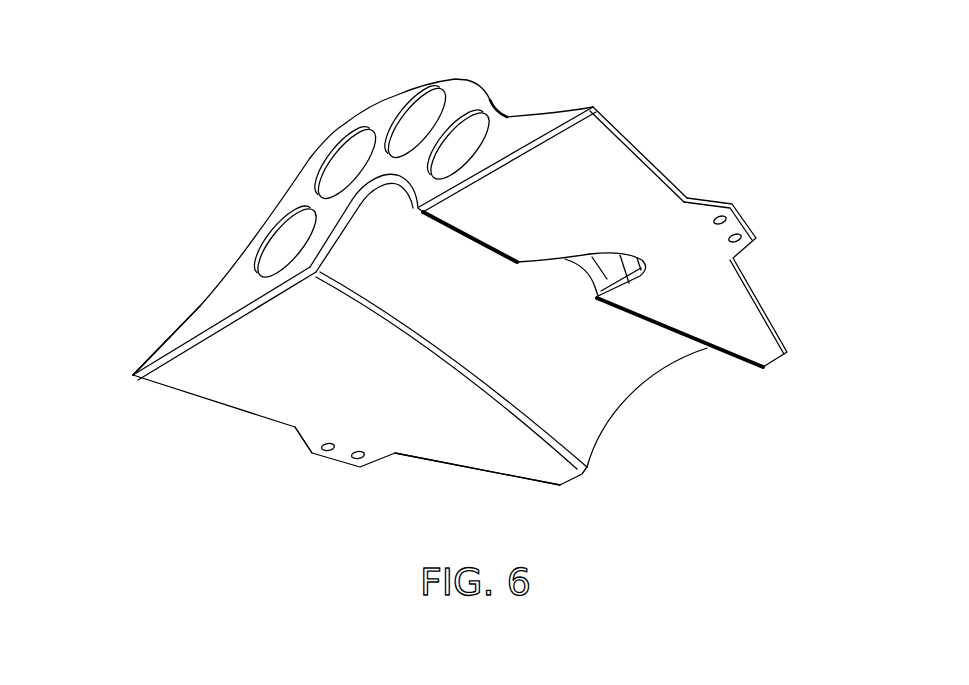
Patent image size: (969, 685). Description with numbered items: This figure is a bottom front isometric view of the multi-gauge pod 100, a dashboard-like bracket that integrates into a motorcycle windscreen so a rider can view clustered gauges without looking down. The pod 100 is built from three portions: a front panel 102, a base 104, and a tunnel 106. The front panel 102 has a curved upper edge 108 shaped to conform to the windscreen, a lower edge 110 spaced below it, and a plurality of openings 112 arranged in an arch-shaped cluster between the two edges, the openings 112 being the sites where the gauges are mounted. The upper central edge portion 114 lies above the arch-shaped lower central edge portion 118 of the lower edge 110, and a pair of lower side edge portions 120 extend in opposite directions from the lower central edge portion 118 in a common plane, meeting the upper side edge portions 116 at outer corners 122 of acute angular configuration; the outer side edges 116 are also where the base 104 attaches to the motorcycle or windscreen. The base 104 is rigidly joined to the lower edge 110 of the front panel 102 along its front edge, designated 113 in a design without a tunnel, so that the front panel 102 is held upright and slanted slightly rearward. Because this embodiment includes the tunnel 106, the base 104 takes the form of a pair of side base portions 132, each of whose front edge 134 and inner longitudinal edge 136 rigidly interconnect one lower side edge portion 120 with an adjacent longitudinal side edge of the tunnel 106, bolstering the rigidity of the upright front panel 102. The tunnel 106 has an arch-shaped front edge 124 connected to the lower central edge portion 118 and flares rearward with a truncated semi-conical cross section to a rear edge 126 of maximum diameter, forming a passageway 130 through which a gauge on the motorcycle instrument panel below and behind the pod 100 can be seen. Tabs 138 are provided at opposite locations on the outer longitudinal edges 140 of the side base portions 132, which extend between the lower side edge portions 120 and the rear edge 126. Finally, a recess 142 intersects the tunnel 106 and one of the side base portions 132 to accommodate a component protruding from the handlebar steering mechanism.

The multi-gauge pod 100 is at (442, 262).
The front panel 102 is at (470, 72).
The base 104 is at (688, 176).
The tunnel 106 is at (622, 412).
The upper edge 108 is at (233, 256).
The lower edge 110 is at (281, 305).
The openings 112 is at (458, 110).
The front edge of the base 113 is at (448, 211).
The upper central edge portion 114 is at (369, 112).
The outer side edges 116 is at (173, 332).
The lower central edge portion 118 is at (357, 196).
The lower side edge portions 120 is at (183, 348).
The outer corners 122 is at (134, 376).
The front edge of the tunnel 124 is at (330, 253).
The rear edge of the tunnel 126 is at (688, 358).
The passageway 130 is at (619, 376).
The side base portions 132 is at (258, 403).
The front edge of side base portion 134 is at (245, 325).
The inner longitudinal edge 136 is at (410, 340).
The tabs 138 is at (335, 453).
The outer longitudinal edges 140 is at (425, 465).
The recess 142 is at (586, 278).